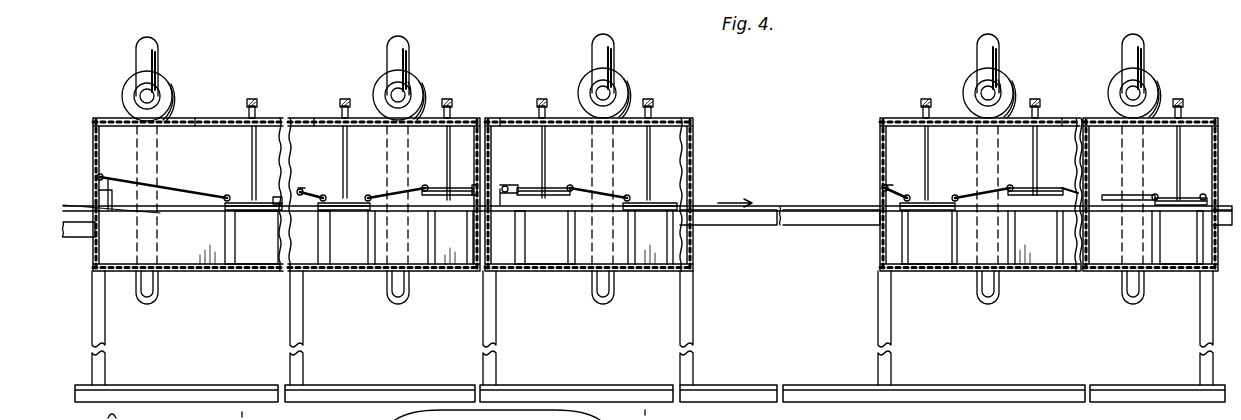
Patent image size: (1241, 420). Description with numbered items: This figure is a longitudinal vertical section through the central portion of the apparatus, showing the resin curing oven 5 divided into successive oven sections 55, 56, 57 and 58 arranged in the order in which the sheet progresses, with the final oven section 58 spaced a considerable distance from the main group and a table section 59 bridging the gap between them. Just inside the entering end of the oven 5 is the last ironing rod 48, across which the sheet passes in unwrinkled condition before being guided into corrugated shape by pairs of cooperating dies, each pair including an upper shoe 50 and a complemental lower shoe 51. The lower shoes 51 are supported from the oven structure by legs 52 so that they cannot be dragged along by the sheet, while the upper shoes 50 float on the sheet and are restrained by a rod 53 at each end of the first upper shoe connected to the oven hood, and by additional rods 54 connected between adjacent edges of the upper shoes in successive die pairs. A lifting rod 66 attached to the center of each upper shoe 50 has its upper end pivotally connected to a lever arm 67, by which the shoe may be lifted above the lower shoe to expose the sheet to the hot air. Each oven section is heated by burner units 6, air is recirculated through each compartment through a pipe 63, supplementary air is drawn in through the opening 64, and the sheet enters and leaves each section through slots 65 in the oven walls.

The oven 5 is at (100, 118).
The burner unit 6 is at (158, 34).
The ironing rod 48 is at (120, 213).
The upper shoe 50 is at (245, 202).
The lower shoe 51 is at (232, 215).
The legs 52 is at (272, 243).
The rod 53 is at (165, 188).
The rods 54 is at (278, 197).
The oven section 55 is at (196, 117).
The oven section 56 is at (315, 118).
The oven section 57 is at (500, 119).
The oven section 58 is at (1062, 118).
The table section 59 is at (800, 210).
The pipe 63 is at (158, 294).
The opening 64 is at (409, 93).
The slots 65 is at (98, 206).
The lifting rod 66 is at (251, 148).
The lever arm 67 is at (257, 110).